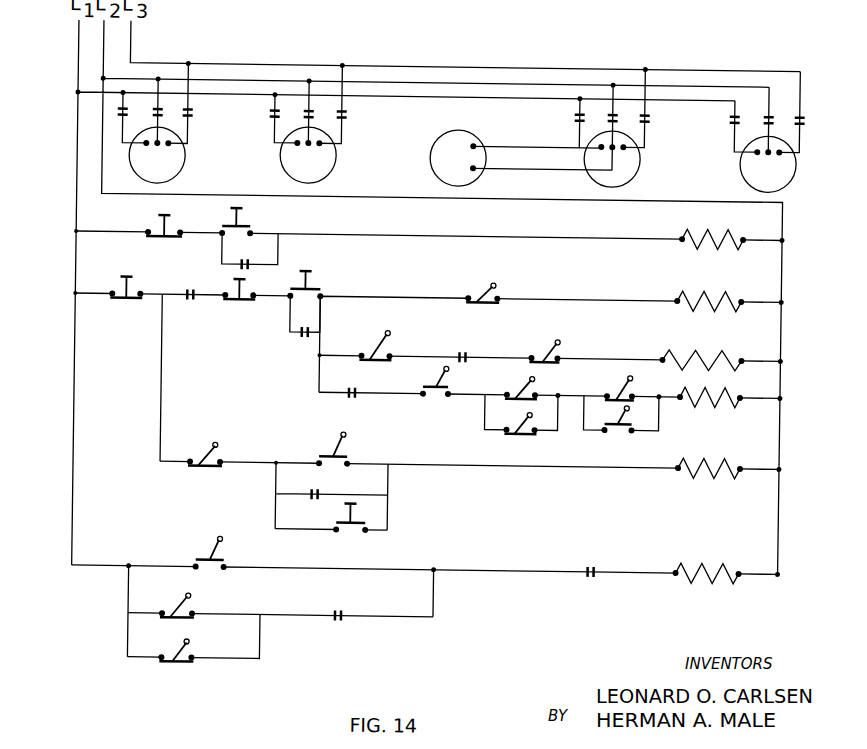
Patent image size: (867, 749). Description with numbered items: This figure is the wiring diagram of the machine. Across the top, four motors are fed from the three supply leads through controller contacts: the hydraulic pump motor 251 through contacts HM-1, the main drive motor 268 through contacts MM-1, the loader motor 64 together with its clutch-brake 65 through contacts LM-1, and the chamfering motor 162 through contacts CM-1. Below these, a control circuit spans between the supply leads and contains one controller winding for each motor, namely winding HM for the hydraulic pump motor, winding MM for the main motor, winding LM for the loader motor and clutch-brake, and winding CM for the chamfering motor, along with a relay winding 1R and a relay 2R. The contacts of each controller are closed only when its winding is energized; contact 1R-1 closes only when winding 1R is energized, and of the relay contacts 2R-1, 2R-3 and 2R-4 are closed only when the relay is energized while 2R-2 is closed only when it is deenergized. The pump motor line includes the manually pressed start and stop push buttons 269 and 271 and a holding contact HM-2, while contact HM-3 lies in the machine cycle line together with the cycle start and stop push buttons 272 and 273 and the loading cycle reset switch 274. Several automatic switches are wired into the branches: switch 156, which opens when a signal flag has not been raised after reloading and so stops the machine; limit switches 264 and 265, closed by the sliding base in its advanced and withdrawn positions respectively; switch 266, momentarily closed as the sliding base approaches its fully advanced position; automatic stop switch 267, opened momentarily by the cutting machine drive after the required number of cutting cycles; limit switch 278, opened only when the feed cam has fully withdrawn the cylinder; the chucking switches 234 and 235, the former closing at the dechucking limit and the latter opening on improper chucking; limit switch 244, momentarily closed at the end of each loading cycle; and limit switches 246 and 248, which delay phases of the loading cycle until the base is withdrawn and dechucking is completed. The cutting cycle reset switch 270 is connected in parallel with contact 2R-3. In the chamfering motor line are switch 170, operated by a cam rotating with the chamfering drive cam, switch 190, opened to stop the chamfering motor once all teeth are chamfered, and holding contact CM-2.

The hydraulic pump motor 251 is at (141, 170).
The main drive motor 268 is at (292, 168).
The clutch-brake 65 is at (439, 166).
The loader motor 64 is at (637, 163).
The chamfering motor 162 is at (752, 174).
The stop switch for the hydraulic pump motor 271 is at (163, 222).
The start switch for the hydraulic pump motor 269 is at (243, 218).
The loading cycle reset switch 274 is at (126, 301).
The stop switch for the machine cycle 273 is at (240, 301).
The start switch for the machine cycle 272 is at (316, 267).
The electric switch 156 is at (500, 279).
The limit switch 264 is at (393, 330).
The limit switch 235 is at (564, 334).
The limit switch 278 is at (439, 392).
The limit switch 246 is at (530, 388).
The limit switch 265 is at (520, 432).
The limit switch 248 is at (630, 374).
The limit switch 234 is at (620, 428).
The automatic stop switch 267 is at (212, 468).
The limit switch 244 is at (333, 447).
The cutting cycle reset switch 270 is at (355, 531).
The switch 266 is at (232, 538).
The switch 170 is at (202, 596).
The switch 190 is at (185, 662).
The hydraulic pump motor controller contacts HM-1 is at (191, 104).
The main motor controller contacts MM-1 is at (347, 106).
The loader motor controller contacts LM-1 is at (649, 106).
The chamfering motor controller contacts CM-1 is at (800, 104).
The hydraulic pump motor controller contact HM-2 is at (250, 251).
The hydraulic pump motor controller contact HM-3 is at (194, 290).
The relay contact 1R-1 is at (304, 333).
The relay contact 2R-1 is at (470, 349).
The relay contact 2R-2 is at (355, 393).
The relay contact 2R-3 is at (324, 489).
The relay contact 2R-4 is at (596, 571).
The chamfering motor controller contact CM-2 is at (345, 617).
The hydraulic pump motor controller winding HM is at (693, 226).
The relay winding 1R is at (707, 287).
The main motor controller winding MM is at (694, 347).
The loader motor controller winding LM is at (711, 397).
The relay 2R is at (722, 468).
The chamfering motor controller winding CM is at (690, 562).